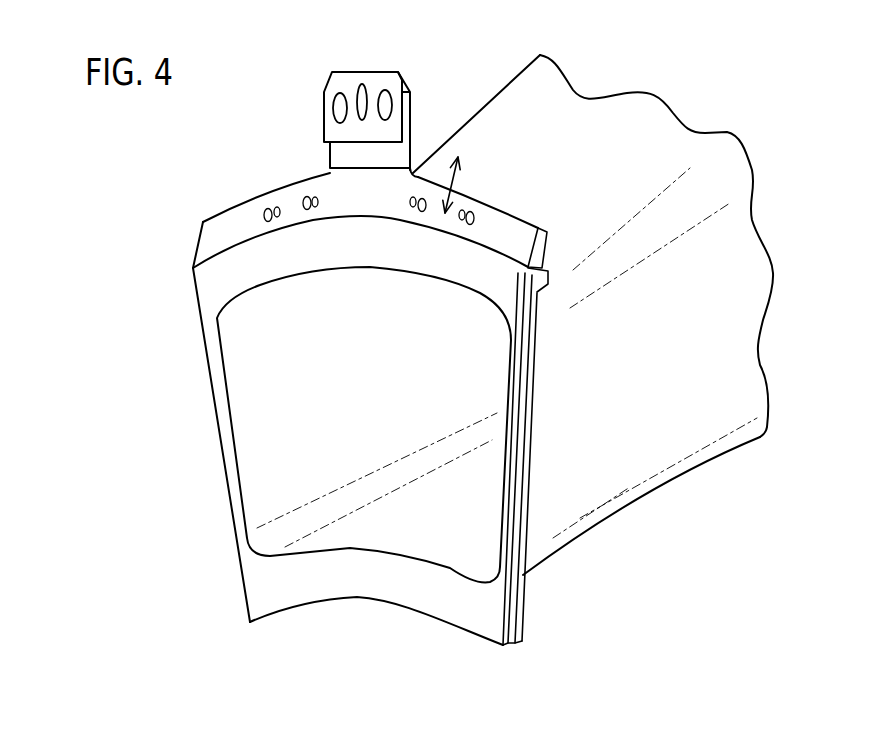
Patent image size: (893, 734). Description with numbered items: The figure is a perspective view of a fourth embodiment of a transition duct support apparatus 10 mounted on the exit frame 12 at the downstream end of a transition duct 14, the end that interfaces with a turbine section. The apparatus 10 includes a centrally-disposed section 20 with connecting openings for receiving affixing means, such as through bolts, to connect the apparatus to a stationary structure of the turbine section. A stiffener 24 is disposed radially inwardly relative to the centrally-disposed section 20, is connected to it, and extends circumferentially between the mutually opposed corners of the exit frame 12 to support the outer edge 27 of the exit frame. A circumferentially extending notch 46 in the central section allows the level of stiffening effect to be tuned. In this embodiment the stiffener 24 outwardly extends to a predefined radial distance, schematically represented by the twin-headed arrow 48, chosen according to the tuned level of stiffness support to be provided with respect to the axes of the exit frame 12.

The transition duct support apparatus 10 is at (235, 185).
The exit frame 12 is at (222, 450).
The transition duct 14 is at (670, 371).
The centrally-disposed section 20 is at (350, 88).
The stiffener 24 is at (365, 197).
The outer edge 27 is at (446, 236).
The circumferentially extending notch 46 is at (347, 153).
The twin-headed arrow 48 is at (458, 183).